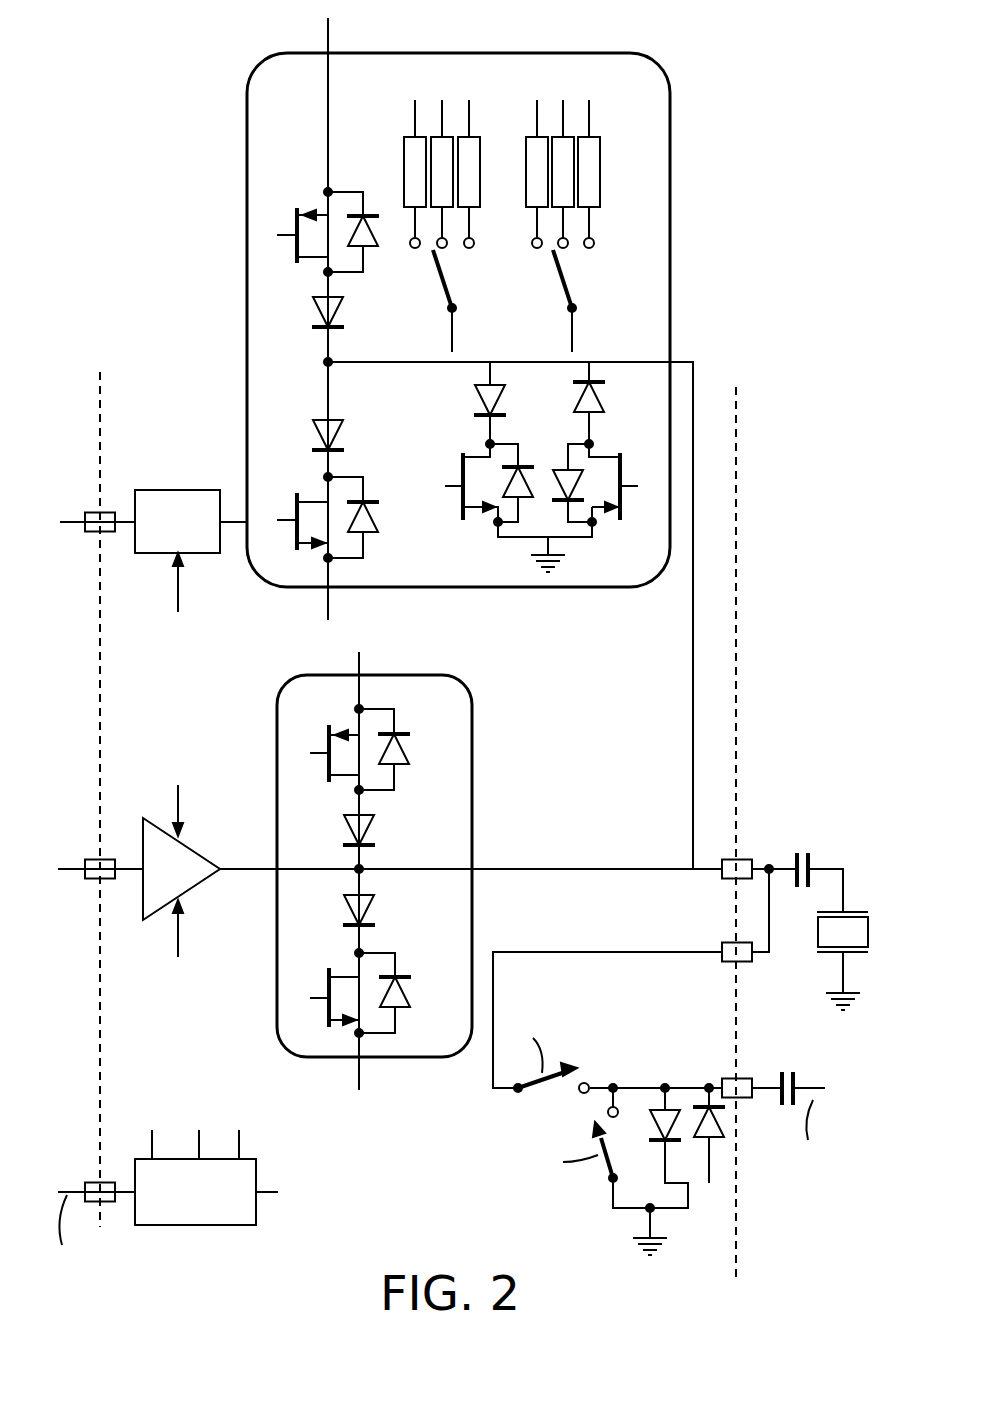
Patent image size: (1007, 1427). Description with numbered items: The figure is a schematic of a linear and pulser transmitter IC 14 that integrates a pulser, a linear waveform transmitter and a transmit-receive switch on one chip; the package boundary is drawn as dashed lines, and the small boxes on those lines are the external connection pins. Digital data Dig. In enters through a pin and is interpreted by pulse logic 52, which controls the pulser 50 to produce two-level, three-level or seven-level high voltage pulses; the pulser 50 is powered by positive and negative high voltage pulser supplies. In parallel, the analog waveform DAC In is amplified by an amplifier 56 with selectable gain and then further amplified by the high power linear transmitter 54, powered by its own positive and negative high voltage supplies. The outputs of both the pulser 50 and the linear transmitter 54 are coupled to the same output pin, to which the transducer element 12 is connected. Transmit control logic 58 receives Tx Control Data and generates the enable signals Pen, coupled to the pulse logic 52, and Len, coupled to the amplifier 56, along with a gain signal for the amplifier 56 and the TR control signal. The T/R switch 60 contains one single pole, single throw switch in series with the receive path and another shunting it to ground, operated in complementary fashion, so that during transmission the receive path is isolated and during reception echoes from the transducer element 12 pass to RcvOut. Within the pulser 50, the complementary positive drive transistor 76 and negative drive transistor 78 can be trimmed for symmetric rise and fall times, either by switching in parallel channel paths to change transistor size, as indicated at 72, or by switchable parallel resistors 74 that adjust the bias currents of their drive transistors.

The transducer element 12 is at (817, 930).
The linear and pulser transmitter IC 14 is at (100, 626).
The pulser 50 is at (670, 160).
The pulse logic 52 is at (178, 490).
The linear transmitter 54 is at (472, 768).
The amplifier 56 is at (200, 852).
The transmit control logic 58 is at (198, 1225).
The T/R switch 60 is at (498, 1171).
The drive transistor size trimming 72 is at (588, 43).
The switchable parallel resistors 74 is at (440, 43).
The positive drive transistor 76 is at (289, 190).
The negative drive transistor 78 is at (289, 477).